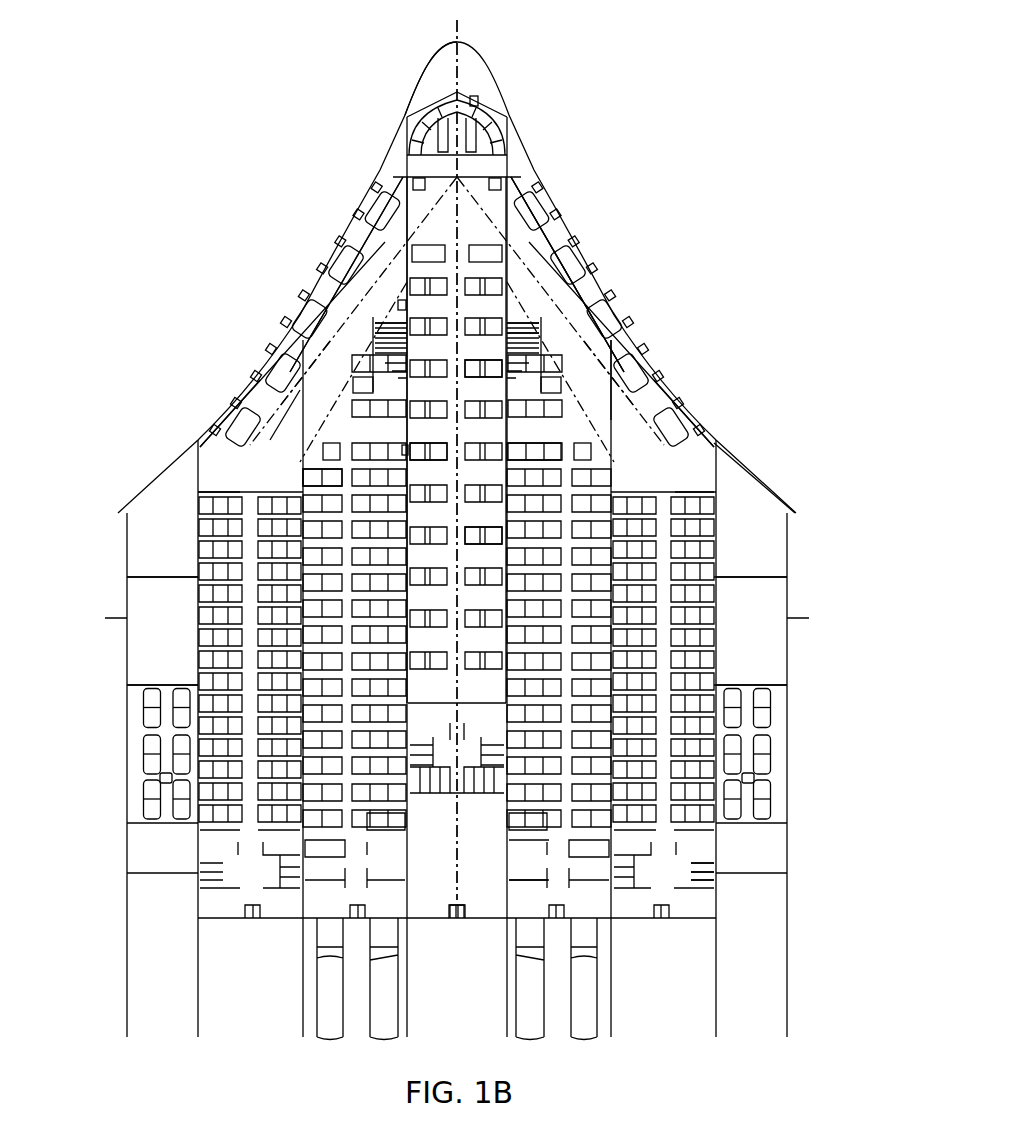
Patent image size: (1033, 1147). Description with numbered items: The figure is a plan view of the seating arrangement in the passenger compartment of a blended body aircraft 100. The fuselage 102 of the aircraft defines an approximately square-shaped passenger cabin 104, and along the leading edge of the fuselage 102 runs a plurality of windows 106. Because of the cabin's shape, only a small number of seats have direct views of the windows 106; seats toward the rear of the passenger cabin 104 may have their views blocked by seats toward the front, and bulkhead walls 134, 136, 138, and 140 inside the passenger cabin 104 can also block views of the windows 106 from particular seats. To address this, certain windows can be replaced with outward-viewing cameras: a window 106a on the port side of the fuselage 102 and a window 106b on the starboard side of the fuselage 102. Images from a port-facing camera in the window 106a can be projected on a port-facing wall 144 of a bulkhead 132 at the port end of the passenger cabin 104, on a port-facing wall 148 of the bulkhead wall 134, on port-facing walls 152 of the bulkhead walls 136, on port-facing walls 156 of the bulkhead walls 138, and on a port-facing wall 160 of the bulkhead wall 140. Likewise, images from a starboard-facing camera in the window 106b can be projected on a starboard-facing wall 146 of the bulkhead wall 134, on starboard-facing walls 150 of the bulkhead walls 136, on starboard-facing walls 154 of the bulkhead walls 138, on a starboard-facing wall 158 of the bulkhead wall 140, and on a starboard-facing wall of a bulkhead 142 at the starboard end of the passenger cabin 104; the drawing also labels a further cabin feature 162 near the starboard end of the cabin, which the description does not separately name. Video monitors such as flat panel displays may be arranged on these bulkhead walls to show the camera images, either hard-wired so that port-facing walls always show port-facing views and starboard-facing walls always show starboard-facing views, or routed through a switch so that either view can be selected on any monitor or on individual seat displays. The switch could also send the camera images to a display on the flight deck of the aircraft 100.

The blended body aircraft 100 is at (636, 74).
The fuselage 102 is at (745, 463).
The passenger cabin 104 is at (470, 228).
The windows 106 is at (190, 380).
The window on the port side 106a is at (305, 303).
The window on the starboard side 106b is at (632, 345).
The bulkhead 132 is at (200, 478).
The bulkhead wall 134 is at (295, 430).
The bulkhead walls 136 is at (410, 430).
The bulkhead walls 138 is at (508, 428).
The bulkhead wall 140 is at (645, 418).
The bulkhead 142 is at (712, 500).
The port-facing wall 144 is at (232, 452).
The starboard-facing wall 146 is at (262, 458).
The port-facing wall 148 is at (312, 465).
The starboard-facing walls 150 is at (478, 98).
The port-facing walls 152 is at (412, 348).
The starboard-facing walls 154 is at (500, 344).
The port-facing walls 156 is at (512, 308).
The starboard-facing wall 158 is at (607, 455).
The port-facing wall 160 is at (692, 436).
The galley 162 is at (712, 840).